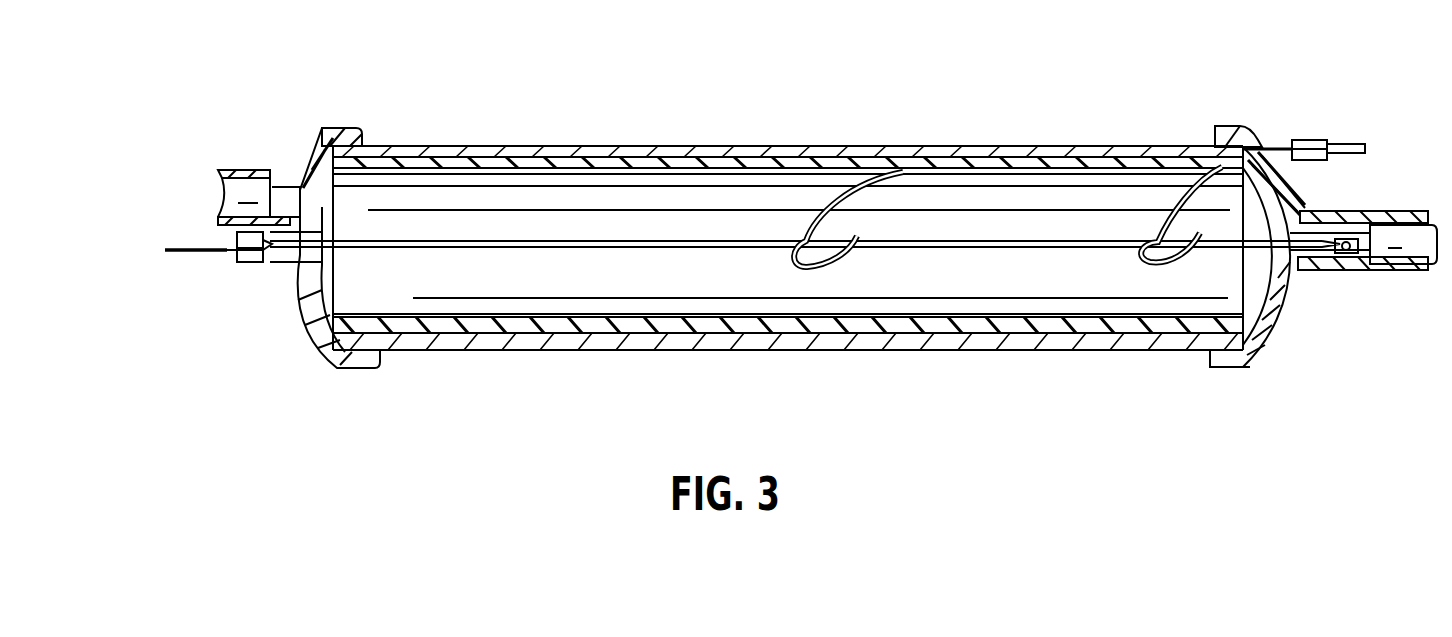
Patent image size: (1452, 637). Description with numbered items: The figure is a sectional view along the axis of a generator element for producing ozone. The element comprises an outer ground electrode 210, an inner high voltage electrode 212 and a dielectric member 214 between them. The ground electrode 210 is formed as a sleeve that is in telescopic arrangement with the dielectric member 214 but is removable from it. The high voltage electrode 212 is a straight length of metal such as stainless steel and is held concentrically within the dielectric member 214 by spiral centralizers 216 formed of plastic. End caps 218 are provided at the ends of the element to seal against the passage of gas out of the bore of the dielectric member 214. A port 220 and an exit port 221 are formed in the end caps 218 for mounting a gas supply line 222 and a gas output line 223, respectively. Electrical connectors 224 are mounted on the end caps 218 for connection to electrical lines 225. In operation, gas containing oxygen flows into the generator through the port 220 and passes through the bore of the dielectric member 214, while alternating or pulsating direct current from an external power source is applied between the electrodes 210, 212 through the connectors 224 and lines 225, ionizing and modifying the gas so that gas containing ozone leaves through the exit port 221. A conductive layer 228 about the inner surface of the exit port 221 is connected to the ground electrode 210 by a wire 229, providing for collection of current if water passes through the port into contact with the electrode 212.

The outer ground electrode 210 is at (520, 146).
The inner high voltage electrode 212 is at (668, 240).
The dielectric member 214 is at (775, 160).
The spiral centralizers 216 is at (878, 150).
The end caps 218 is at (305, 150).
The port 220 is at (297, 187).
The exit port 221 is at (1305, 205).
The gas supply line 222 is at (226, 170).
The gas output line 223 is at (1390, 272).
The electrical connectors 224 is at (250, 262).
The electrical lines 225 is at (228, 252).
The conductive layer 228 is at (1350, 253).
The wire 229 is at (1303, 203).